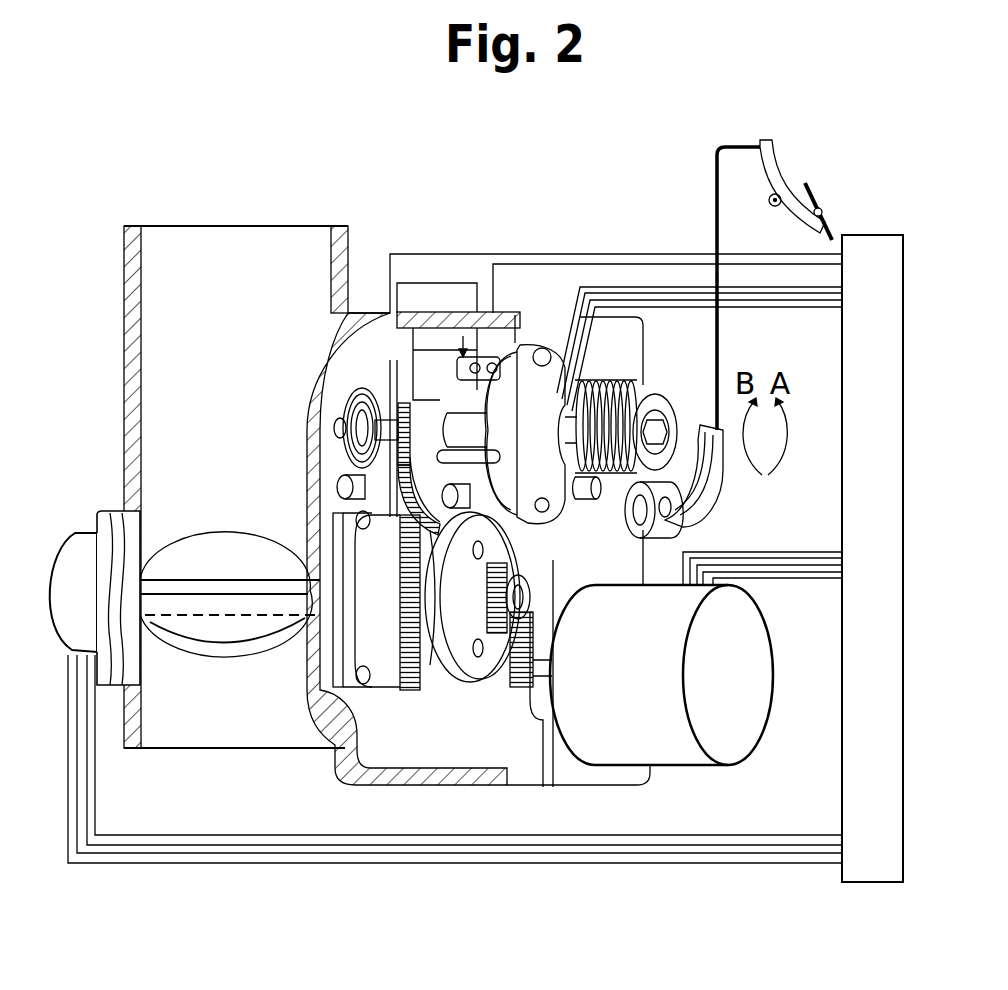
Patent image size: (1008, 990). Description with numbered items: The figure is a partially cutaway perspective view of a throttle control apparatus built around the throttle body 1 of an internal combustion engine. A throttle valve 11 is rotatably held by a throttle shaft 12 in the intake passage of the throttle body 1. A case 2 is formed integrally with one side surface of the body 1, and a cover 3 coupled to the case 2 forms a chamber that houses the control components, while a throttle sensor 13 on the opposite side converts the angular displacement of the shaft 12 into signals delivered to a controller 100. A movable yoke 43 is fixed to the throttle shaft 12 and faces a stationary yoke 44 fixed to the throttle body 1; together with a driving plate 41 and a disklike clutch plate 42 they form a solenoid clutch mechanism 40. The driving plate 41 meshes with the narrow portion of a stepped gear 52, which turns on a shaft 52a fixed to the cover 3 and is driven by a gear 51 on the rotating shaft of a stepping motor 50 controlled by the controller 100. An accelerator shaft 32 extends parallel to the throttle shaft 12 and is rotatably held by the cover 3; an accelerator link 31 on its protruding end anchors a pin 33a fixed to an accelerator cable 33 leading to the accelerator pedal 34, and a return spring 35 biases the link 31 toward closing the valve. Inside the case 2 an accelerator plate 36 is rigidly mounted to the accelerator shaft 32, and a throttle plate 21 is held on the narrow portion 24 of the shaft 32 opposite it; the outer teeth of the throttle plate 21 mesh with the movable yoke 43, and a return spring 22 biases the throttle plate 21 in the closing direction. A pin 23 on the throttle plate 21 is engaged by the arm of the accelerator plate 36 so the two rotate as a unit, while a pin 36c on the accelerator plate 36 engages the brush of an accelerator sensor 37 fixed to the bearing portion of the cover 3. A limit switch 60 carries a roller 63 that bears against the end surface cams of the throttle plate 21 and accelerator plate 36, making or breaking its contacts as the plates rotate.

The throttle body 1 is at (137, 352).
The case 2 is at (510, 322).
The cover 3 is at (553, 323).
The throttle valve 11 is at (215, 640).
The throttle shaft 12 is at (173, 580).
The throttle sensor 13 is at (83, 543).
The throttle plate 21 is at (395, 310).
The return spring 22 is at (393, 380).
The pin 23 is at (335, 488).
The narrow portion 24 is at (340, 428).
The accelerator link 31 is at (713, 472).
The accelerator shaft 32 is at (600, 380).
The accelerator cable 33 is at (715, 185).
The pin 33a is at (690, 513).
The accelerator pedal 34 is at (770, 164).
The return spring 35 is at (647, 380).
The accelerator plate 36 is at (405, 400).
The pin 36c is at (375, 452).
The accelerator sensor 37 is at (565, 372).
The solenoid clutch mechanism 40 is at (405, 687).
The driving plate 41 is at (475, 680).
The clutch plate 42 is at (440, 690).
The movable yoke 43 is at (365, 763).
The stationary yoke 44 is at (345, 765).
The motor 50 is at (670, 752).
The gear 51 is at (525, 690).
The gear 52 is at (500, 640).
The shaft 52a is at (553, 620).
The limit switch 60 is at (492, 357).
The roller 63 is at (462, 336).
The controller 100 is at (870, 866).